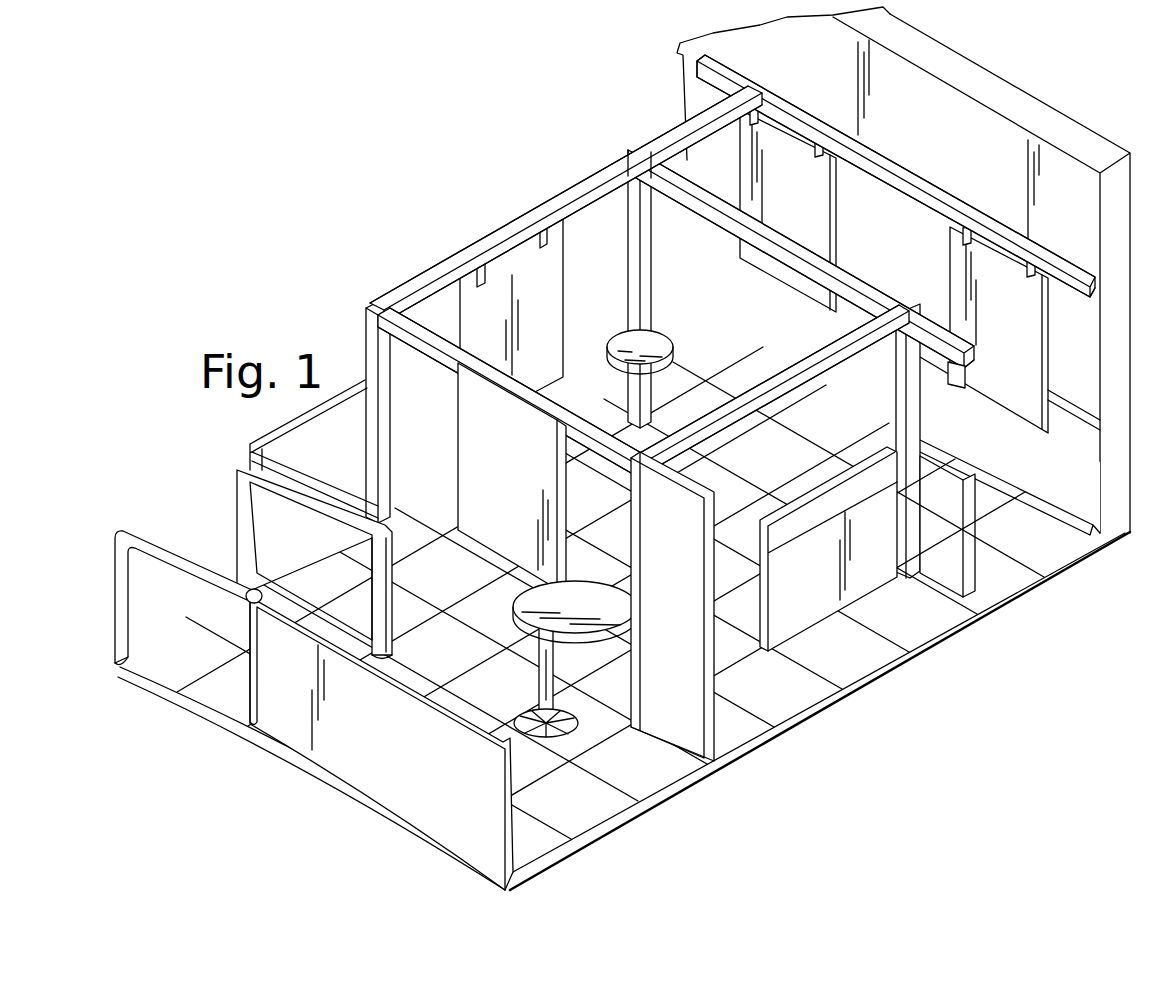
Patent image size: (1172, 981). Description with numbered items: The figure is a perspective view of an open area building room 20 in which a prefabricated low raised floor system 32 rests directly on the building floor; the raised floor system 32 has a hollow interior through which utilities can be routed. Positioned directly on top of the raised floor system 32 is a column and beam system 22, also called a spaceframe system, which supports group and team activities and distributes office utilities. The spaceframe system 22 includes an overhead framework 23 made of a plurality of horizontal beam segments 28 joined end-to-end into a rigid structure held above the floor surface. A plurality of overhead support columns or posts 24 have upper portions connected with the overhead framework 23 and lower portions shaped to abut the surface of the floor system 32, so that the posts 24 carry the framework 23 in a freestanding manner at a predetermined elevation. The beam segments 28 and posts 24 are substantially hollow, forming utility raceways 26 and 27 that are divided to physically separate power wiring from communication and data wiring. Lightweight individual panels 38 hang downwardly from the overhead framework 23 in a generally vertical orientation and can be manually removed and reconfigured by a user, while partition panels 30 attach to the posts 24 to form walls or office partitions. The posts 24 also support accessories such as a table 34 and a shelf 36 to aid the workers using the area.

The open area building room 20 is at (936, 100).
The column and beam system 22 is at (757, 228).
The overhead framework 23 is at (640, 157).
The overhead support columns or posts 24 is at (643, 264).
The utility raceway 26 is at (903, 305).
The utility raceway 27 is at (968, 366).
The beam segments 28 is at (680, 131).
The partition panels 30 is at (690, 712).
The prefabricated low raised floor system 32 is at (851, 650).
The table 34 is at (600, 648).
The shelf 36 is at (660, 345).
The panels 38 is at (468, 500).